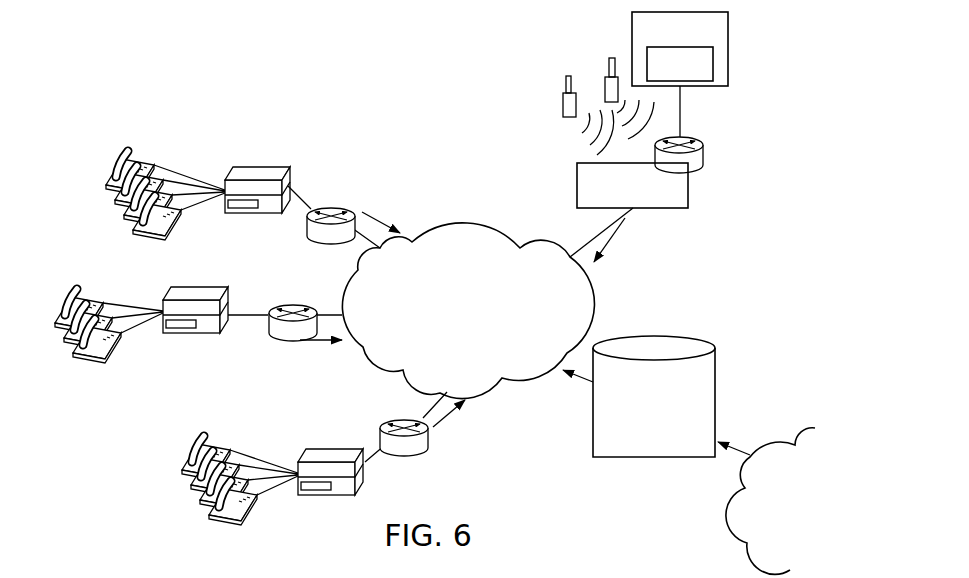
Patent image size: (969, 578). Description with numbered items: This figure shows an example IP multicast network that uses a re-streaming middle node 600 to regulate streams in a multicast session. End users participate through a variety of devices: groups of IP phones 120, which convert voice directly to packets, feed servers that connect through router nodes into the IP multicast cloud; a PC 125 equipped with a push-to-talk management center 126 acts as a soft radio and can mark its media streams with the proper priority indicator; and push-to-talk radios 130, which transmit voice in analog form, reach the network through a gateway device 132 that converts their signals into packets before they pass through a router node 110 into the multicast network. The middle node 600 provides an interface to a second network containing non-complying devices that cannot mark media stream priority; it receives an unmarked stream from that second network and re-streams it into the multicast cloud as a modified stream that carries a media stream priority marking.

The middle node 600 is at (54, 37).
The IP phones 120 is at (150, 160).
The PC 125 is at (728, 22).
The push to talk management center 126 is at (713, 50).
The push-to-talk radios 130 is at (563, 97).
The router N4 110 is at (706, 153).
The gateway device 132 is at (688, 190).